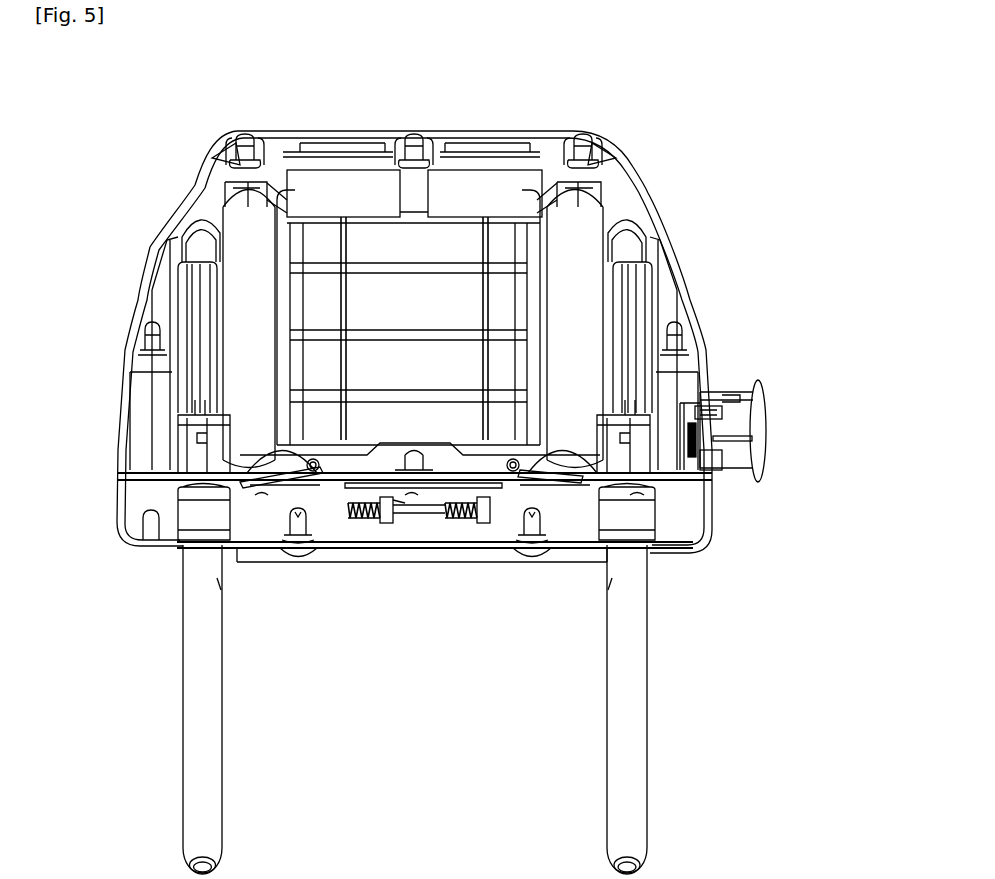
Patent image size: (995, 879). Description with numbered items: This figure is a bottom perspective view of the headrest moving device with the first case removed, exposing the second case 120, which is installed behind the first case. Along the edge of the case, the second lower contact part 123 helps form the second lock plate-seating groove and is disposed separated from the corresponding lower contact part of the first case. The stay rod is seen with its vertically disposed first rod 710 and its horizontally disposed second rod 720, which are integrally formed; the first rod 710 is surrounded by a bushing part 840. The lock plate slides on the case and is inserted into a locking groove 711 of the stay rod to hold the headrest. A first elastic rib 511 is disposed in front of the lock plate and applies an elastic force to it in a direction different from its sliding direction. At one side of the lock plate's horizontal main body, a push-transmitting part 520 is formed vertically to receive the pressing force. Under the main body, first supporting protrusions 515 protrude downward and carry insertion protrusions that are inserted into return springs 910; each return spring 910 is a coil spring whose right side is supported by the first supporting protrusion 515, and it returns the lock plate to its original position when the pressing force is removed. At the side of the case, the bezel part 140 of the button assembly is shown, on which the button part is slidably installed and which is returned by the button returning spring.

The second case 120 is at (687, 197).
The second lower contact part 123 is at (273, 532).
The bezel part 140 is at (747, 420).
The first elastic rib 511 is at (311, 478).
The first supporting protrusion 515 is at (482, 523).
The push-transmitting part 520 is at (692, 440).
The first rod 710 is at (197, 240).
The locking groove 711 is at (613, 314).
The second rod 720 is at (274, 183).
The bushing part 840 is at (193, 317).
The return spring 910 is at (452, 518).